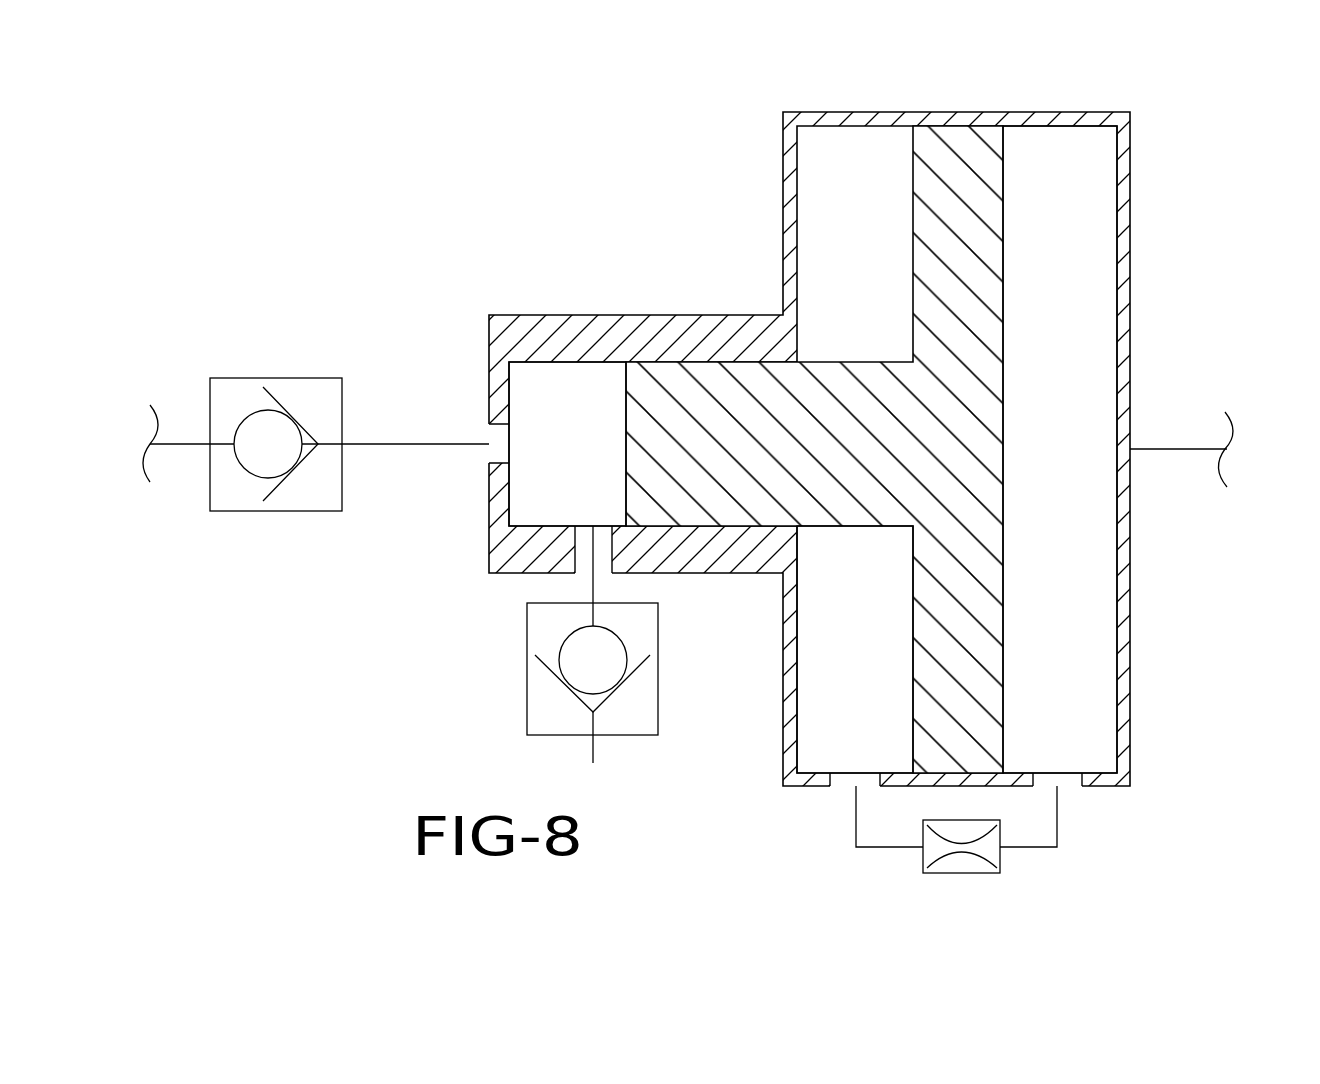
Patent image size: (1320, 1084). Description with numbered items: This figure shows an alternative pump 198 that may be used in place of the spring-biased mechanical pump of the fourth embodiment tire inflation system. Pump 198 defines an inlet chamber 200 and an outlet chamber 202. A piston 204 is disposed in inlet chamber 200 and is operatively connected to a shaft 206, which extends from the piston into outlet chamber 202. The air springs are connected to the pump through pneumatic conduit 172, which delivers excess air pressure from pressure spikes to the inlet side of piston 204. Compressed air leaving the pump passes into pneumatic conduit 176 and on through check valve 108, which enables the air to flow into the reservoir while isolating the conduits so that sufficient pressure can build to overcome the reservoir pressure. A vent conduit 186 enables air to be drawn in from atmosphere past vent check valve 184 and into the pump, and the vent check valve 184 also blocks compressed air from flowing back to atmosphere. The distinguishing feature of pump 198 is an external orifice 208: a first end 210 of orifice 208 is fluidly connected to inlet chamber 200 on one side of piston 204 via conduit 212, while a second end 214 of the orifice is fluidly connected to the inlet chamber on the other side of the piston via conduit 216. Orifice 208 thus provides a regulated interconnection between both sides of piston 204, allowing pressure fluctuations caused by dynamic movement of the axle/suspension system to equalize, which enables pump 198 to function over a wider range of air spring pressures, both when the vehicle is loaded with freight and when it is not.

The check valve 108 is at (240, 378).
The pneumatic conduit 176 is at (395, 393).
The vent check valve 184 is at (545, 735).
The vent conduit 186 is at (593, 590).
The pump 198 is at (1142, 132).
The inlet chamber 200 is at (1118, 196).
The outlet chamber 202 is at (539, 360).
The piston 204 is at (1003, 158).
The shaft 206 is at (858, 527).
The external orifice 208 is at (968, 875).
The first end of orifice 210 is at (985, 852).
The conduit 212 is at (1058, 828).
The second end of orifice 214 is at (937, 852).
The conduit 216 is at (856, 828).
The pneumatic conduit 172 is at (1172, 449).